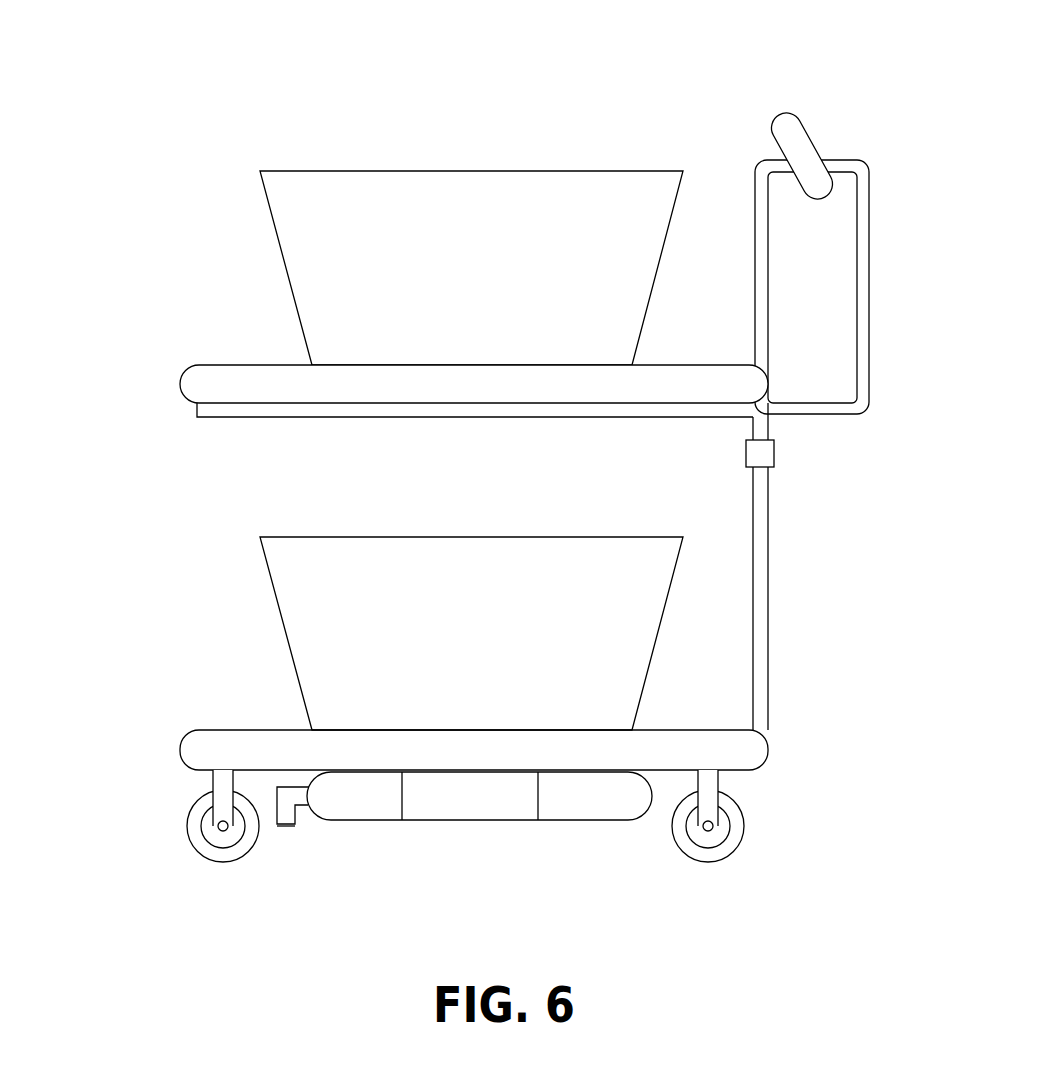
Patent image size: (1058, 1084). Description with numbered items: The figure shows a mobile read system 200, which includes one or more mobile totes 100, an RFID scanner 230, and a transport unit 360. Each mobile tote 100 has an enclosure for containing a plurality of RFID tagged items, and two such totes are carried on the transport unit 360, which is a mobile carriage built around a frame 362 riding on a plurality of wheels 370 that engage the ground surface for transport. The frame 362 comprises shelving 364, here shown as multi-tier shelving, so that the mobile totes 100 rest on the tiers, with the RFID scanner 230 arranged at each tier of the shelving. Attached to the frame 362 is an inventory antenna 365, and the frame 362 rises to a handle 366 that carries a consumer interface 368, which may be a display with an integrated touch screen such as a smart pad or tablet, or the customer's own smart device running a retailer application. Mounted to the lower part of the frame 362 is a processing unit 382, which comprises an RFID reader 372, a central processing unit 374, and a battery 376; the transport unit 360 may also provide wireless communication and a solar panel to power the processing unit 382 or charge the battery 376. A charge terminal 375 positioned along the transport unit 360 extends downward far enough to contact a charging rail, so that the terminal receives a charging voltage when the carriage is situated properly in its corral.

The mobile read system 200 is at (300, 95).
The mobile tote 100 is at (265, 237).
The RFID scanner 230 is at (173, 367).
The transport unit 360 is at (501, 503).
The frame 362 is at (770, 490).
The shelving 364 is at (260, 417).
The inventory antenna 365 is at (777, 447).
The handle 366 is at (869, 265).
The consumer interface 368 is at (793, 110).
The wheel 370 is at (742, 812).
The RFID reader 372 is at (437, 820).
The central processing unit 374 is at (598, 820).
The charge terminal 375 is at (278, 826).
The battery 376 is at (365, 820).
The processing unit 382 is at (479, 858).